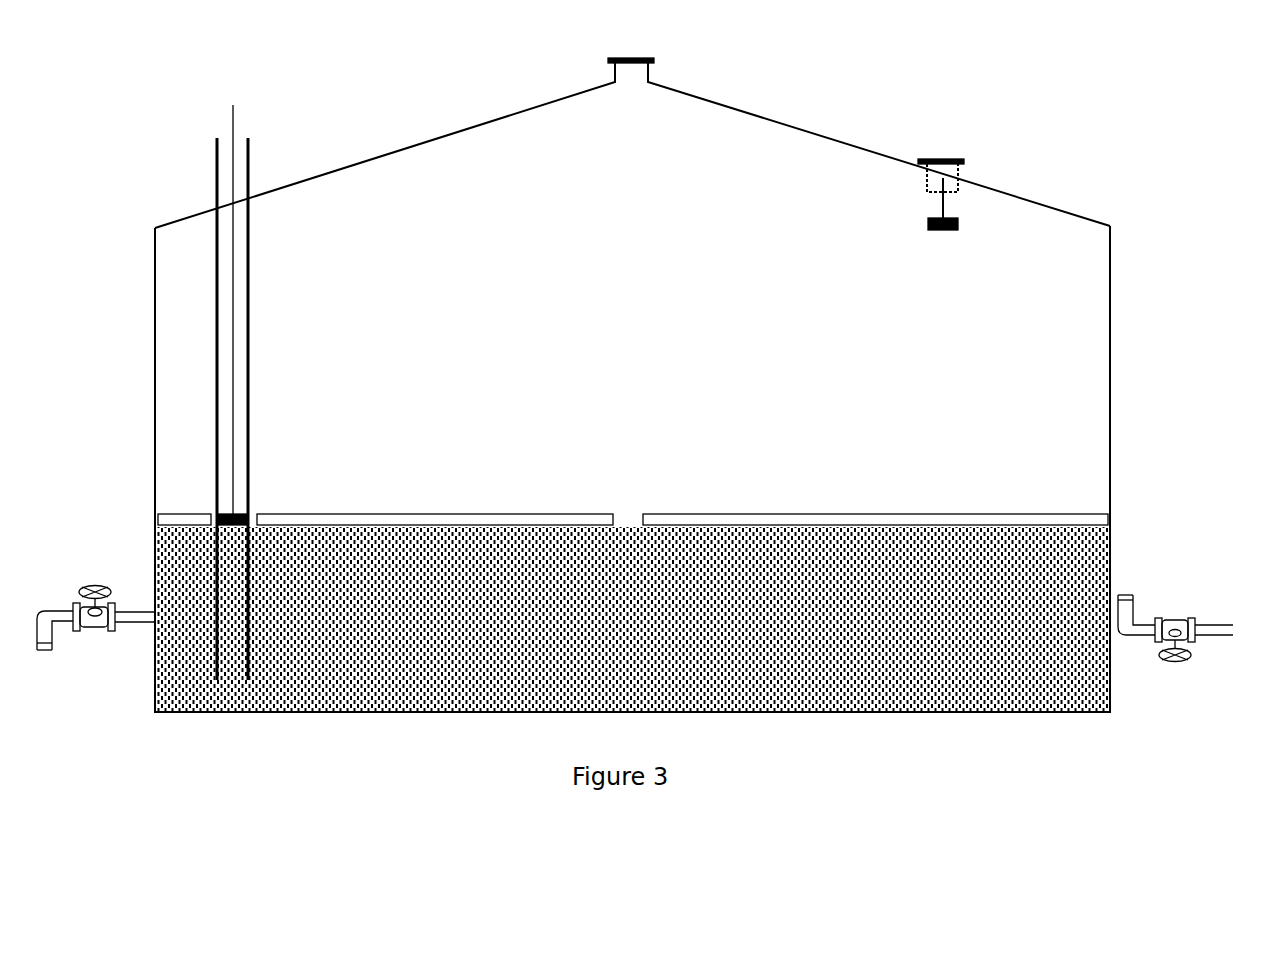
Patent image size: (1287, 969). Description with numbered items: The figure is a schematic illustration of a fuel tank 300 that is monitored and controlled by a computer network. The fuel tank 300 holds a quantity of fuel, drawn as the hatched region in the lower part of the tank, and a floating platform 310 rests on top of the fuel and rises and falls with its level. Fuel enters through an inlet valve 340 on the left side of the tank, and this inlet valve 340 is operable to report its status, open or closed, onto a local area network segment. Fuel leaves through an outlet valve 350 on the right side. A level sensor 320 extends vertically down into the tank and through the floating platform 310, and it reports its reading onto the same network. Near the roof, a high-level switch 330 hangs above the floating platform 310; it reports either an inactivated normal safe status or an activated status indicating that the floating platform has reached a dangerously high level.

The fuel tank 300 is at (1110, 333).
The perforated plate / baffle 310 is at (790, 515).
The level sensor 320 is at (233, 112).
The high-level switch 330 is at (943, 207).
The inlet valve 340 is at (92, 583).
The outlet valve 350 is at (1165, 594).